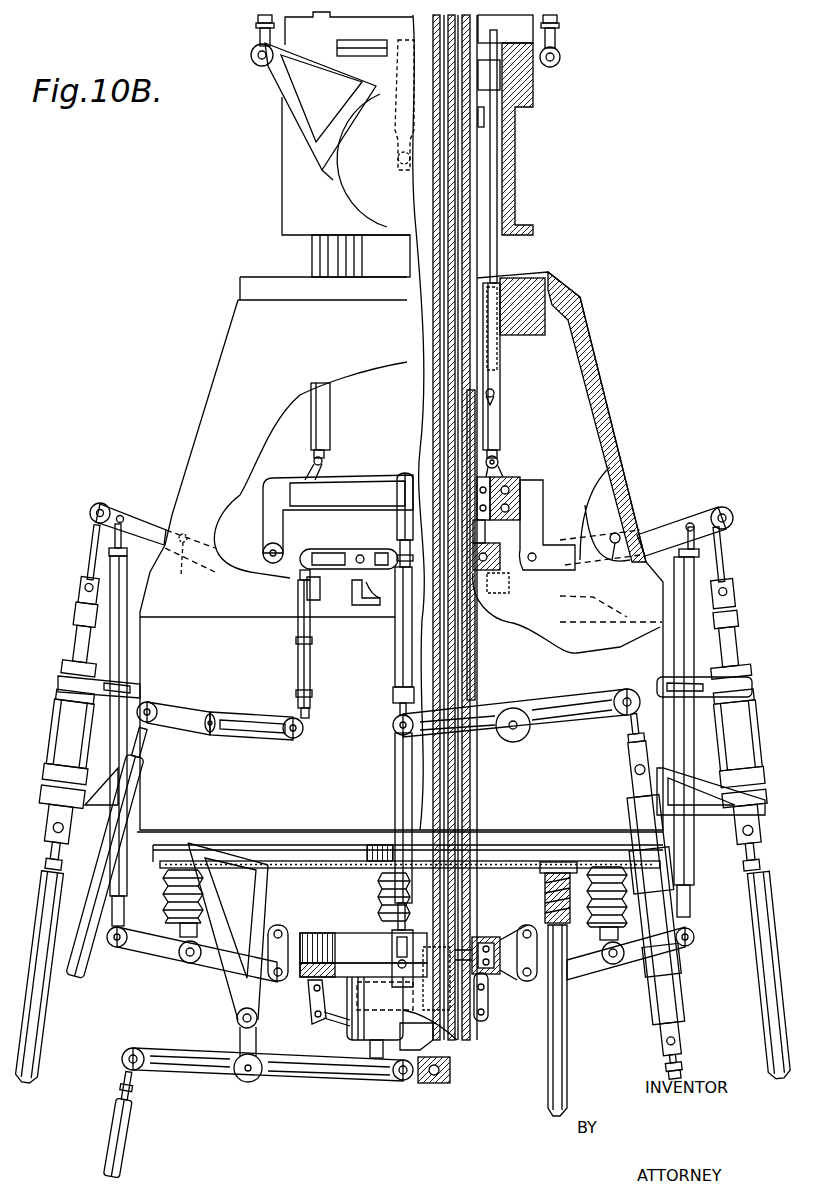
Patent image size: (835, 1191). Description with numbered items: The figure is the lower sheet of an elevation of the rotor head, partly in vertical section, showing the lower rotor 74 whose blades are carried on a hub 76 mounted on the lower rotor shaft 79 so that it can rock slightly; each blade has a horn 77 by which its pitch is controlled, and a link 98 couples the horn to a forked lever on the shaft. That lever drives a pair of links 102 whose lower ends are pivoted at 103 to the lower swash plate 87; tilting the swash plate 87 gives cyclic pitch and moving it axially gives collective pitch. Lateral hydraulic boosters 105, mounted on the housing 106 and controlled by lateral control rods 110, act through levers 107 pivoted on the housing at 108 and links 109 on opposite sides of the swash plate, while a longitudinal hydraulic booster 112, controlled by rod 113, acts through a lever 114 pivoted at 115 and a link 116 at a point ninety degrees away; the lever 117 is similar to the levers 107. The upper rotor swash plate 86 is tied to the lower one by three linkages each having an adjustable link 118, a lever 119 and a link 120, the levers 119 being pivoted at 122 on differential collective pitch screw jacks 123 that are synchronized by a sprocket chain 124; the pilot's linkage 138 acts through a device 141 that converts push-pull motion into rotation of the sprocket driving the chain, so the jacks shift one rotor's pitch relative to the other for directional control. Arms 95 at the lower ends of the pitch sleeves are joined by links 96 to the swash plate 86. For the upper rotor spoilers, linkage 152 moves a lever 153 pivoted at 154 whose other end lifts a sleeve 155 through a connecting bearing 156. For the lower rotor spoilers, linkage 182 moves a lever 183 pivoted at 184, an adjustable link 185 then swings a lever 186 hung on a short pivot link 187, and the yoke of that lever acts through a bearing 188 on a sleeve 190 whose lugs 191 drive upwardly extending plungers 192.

The lower rotor 74 is at (271, 163).
The hub 76 is at (293, 188).
The horn 77 is at (262, 66).
The lower rotor shaft 79 is at (330, 255).
The link 98 is at (257, 35).
The housing 106 is at (604, 400).
The lever 107 is at (104, 505).
The pivot 108 is at (181, 550).
The link 109 is at (262, 524).
The link 102 is at (330, 424).
The pivot connection 103 is at (324, 461).
The ear or lug 191 is at (496, 402).
The plunger 192 is at (500, 356).
The lower swash plate 87 is at (508, 480).
The sleeve 190 is at (478, 531).
The bearing 188 is at (512, 585).
The lever 117 is at (396, 495).
The link 116 is at (394, 665).
The adjustable link 118 is at (128, 655).
The lateral hydraulic booster 105 is at (55, 730).
The lateral control rod 110 is at (44, 1062).
The longitudinal hydraulic booster 112 is at (688, 966).
The rod 113 is at (662, 1070).
The lever 114 is at (560, 732).
The pivot 115 is at (515, 745).
The lever 183 is at (230, 712).
The pivot 184 is at (208, 735).
The adjustable link 185 is at (297, 650).
The lever 186 is at (330, 556).
The short pivot link 187 is at (352, 607).
The linkage 182 is at (85, 970).
The sprocket chain 124 is at (295, 865).
The differential collective pitch screw jack 123 is at (165, 902).
The device 141 is at (545, 885).
The linkage 138 is at (567, 1078).
The upper rotor swash plate 86 is at (484, 935).
The link 120 is at (280, 982).
The lever 119 is at (158, 963).
The pivot 122 is at (188, 966).
The link 96 is at (308, 1003).
The arm 95 is at (336, 1025).
The linkage 152 is at (132, 1146).
The lever 153 is at (295, 1082).
The pivot 154 is at (246, 1084).
The sleeve 155 is at (440, 1050).
The connecting bearing 156 is at (430, 1085).